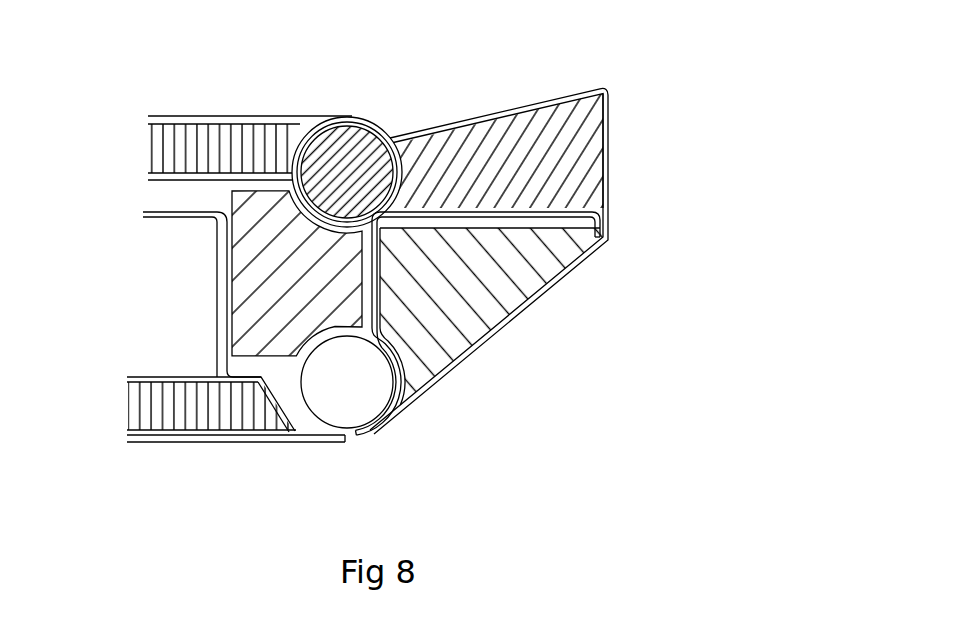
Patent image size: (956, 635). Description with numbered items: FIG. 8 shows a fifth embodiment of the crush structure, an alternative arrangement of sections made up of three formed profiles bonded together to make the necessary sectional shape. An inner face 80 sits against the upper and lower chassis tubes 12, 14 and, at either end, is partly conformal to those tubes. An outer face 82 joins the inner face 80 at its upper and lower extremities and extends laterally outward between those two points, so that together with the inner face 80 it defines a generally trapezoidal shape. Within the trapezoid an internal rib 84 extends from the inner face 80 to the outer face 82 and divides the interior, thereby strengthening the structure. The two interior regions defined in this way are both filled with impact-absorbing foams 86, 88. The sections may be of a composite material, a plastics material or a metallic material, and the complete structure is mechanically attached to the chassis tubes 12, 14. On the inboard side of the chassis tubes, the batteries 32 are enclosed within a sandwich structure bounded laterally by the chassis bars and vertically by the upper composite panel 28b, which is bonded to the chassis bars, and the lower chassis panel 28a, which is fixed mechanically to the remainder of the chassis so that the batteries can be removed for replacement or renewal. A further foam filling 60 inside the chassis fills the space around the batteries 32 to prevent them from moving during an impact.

The upper bar 12 is at (357, 158).
The lower bar 14 is at (353, 395).
The lower chassis panel 28a is at (227, 420).
The upper composite panel 28b is at (227, 145).
The batteries 32 is at (175, 303).
The foam filling 60 is at (273, 250).
The inner face 80 is at (390, 320).
The outer face 82 is at (610, 227).
The internal rib 84 is at (521, 208).
The impact-absorbing foam 86 is at (538, 138).
The impact-absorbing foam 88 is at (487, 295).